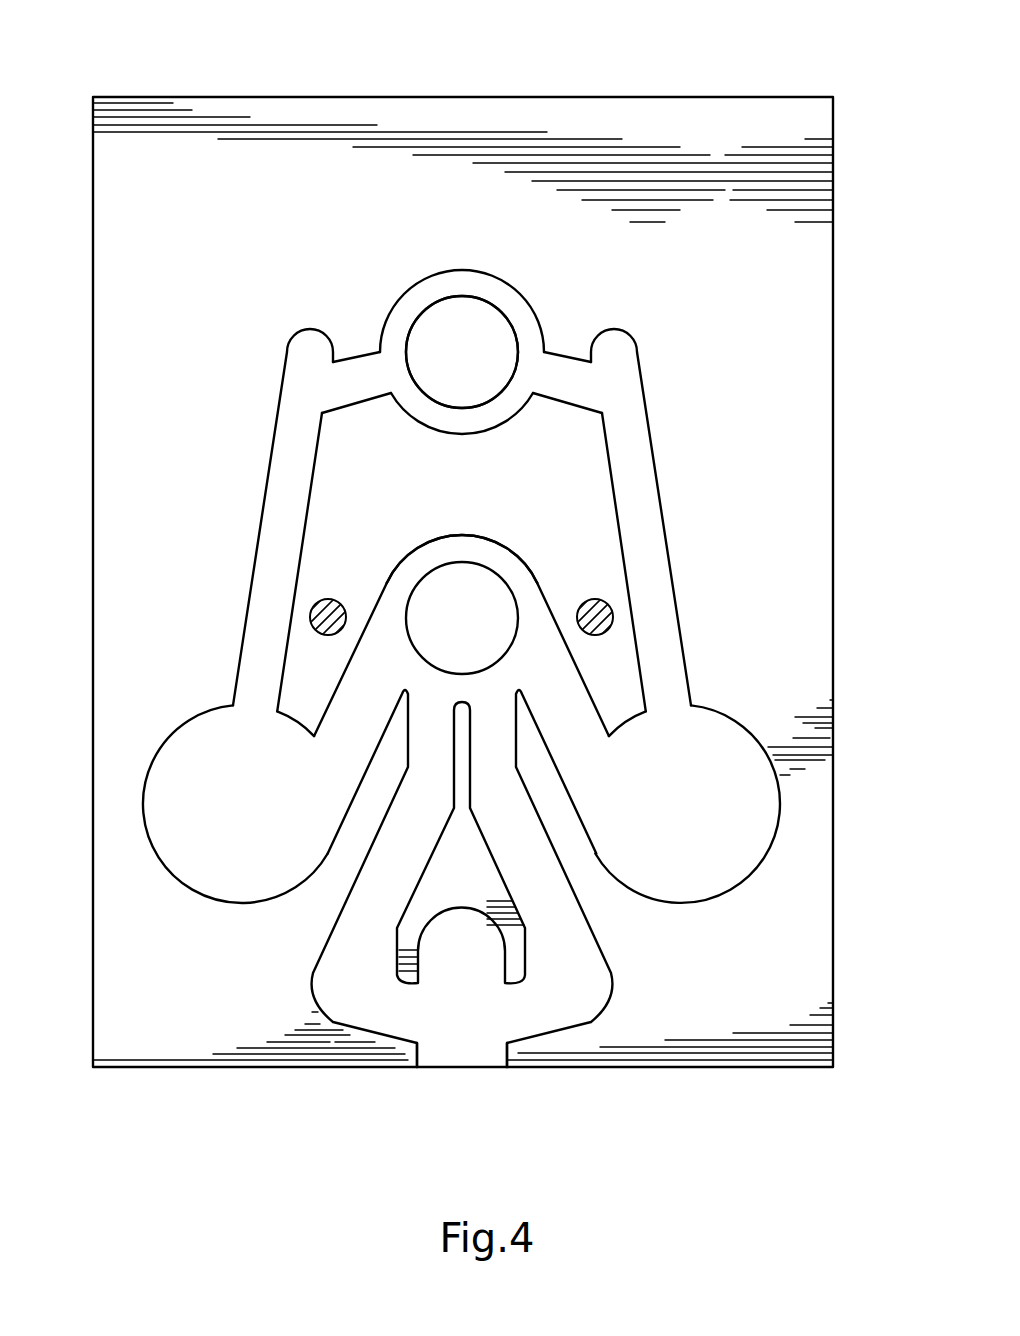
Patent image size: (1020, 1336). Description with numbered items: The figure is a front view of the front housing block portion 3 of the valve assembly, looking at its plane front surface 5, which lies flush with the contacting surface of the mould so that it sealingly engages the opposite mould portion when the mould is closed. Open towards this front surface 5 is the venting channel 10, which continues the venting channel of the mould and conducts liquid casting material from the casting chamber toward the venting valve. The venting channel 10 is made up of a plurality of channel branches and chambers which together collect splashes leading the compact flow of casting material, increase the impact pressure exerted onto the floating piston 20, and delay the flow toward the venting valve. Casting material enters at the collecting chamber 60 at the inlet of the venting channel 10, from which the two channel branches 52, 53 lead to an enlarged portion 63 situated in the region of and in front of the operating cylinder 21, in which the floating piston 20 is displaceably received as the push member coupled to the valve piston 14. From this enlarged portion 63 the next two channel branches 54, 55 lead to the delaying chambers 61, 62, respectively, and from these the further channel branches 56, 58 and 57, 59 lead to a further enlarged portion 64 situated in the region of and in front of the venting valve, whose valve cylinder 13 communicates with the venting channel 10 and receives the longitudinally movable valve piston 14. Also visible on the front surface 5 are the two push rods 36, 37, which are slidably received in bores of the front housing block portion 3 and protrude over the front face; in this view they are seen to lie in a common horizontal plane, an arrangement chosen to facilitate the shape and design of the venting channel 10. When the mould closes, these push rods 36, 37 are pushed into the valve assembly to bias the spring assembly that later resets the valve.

The front housing block portion 3 is at (747, 97).
The front surface 5 is at (797, 123).
The venting channel 10 is at (460, 1040).
The valve cylinder 13 is at (455, 295).
The valve piston 14 is at (480, 343).
The floating piston 20 is at (472, 612).
The operating cylinder 21 is at (497, 568).
The push rod 36 is at (310, 617).
The push rod 37 is at (612, 613).
The channel branch 52 is at (400, 863).
The channel branch 53 is at (523, 863).
The channel branch 54 is at (360, 707).
The channel branch 55 is at (570, 705).
The channel branch 56 is at (291, 440).
The channel branch 57 is at (635, 457).
The channel branch 58 is at (360, 373).
The channel branch 59 is at (563, 375).
The collecting chamber 60 is at (460, 947).
The delaying chamber 61 is at (203, 817).
The delaying chamber 62 is at (697, 797).
The enlarged portion 63 is at (452, 550).
The enlarged portion 64 is at (410, 303).